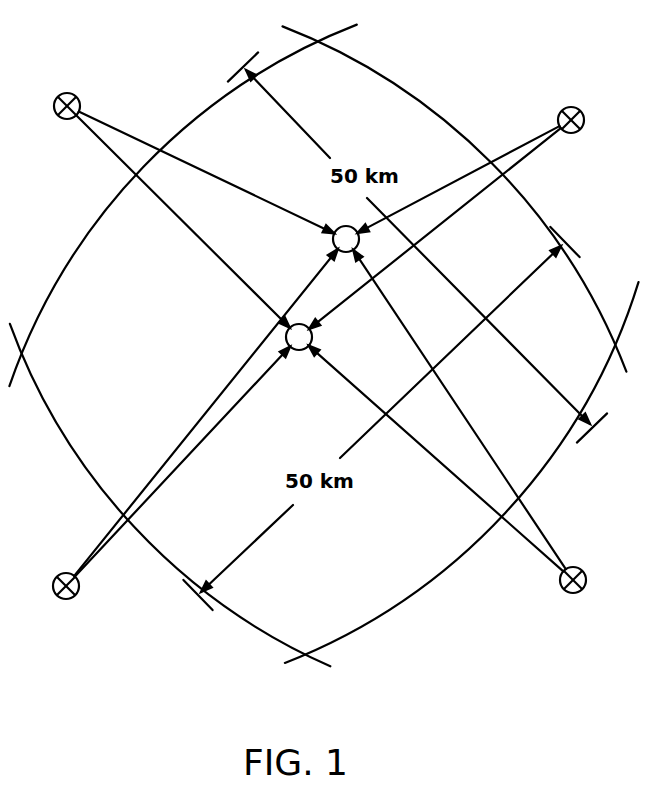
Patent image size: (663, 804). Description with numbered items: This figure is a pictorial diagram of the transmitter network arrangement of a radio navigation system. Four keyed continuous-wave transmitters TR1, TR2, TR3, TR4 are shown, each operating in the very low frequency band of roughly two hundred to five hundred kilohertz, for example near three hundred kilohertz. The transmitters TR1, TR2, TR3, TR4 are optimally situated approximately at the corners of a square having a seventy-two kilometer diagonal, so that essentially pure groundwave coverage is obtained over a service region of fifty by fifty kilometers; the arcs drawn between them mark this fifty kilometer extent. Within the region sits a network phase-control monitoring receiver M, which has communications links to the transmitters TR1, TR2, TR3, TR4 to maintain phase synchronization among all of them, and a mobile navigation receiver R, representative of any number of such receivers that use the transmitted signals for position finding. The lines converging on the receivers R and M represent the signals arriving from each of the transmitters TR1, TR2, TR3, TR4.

The keyed CW transmitter TR1 is at (471, 218).
The keyed CW transmitter TR2 is at (452, 438).
The keyed CW transmitter TR3 is at (194, 437).
The keyed CW transmitter TR4 is at (193, 198).
The mobile navigation receiver R is at (330, 240).
The network phase-control monitoring receiver M is at (299, 355).